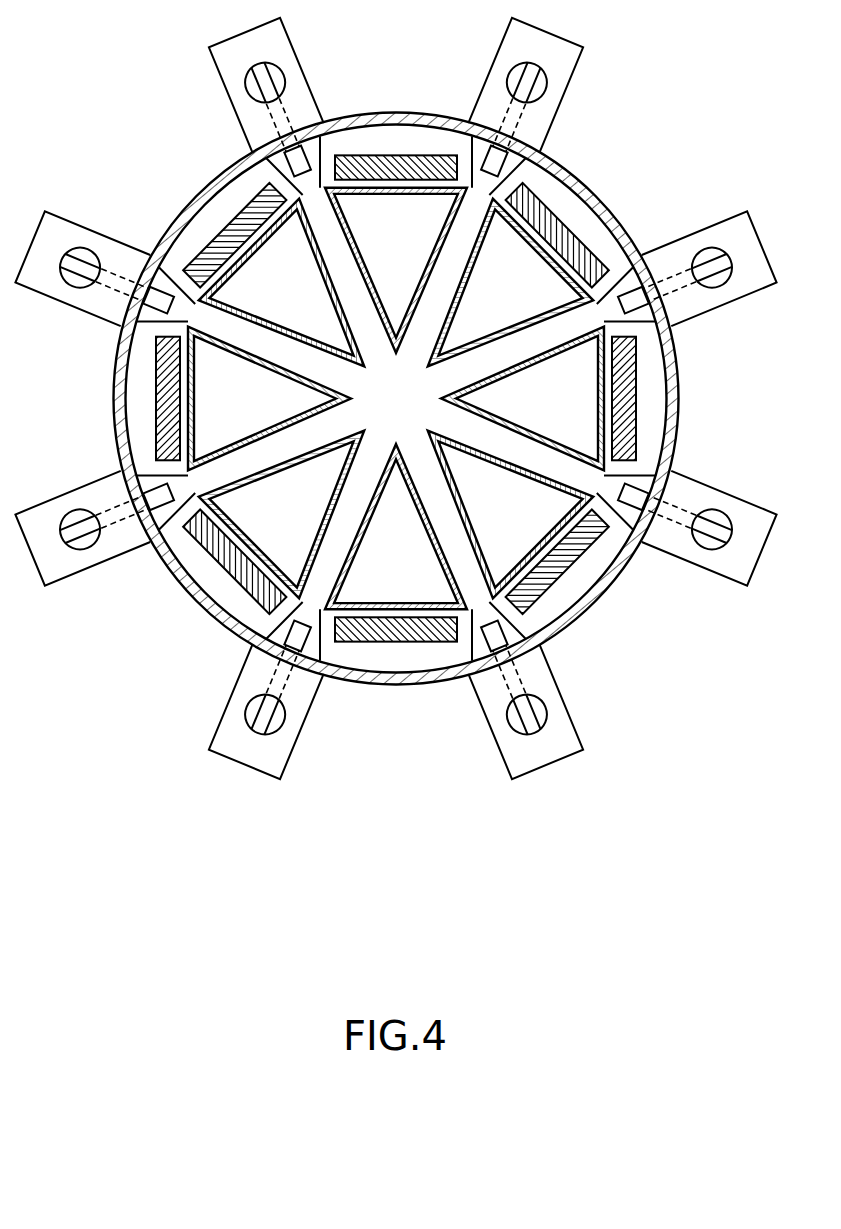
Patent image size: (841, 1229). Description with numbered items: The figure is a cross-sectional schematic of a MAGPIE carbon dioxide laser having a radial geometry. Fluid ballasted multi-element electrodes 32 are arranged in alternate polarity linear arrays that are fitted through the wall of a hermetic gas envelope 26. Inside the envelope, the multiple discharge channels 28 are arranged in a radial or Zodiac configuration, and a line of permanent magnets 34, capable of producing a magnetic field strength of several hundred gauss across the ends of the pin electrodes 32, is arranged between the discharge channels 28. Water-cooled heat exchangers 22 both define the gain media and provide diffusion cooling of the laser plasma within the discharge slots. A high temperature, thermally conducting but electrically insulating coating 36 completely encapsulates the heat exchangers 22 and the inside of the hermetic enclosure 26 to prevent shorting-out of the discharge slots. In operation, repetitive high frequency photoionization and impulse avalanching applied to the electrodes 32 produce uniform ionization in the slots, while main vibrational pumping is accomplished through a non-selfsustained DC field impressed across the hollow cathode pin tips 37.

The water-cooled heat exchanger 22 is at (396, 279).
The hermetic gas envelope 26 is at (374, 710).
The discharge channel 28 is at (482, 229).
The fluid ballasted multi-element electrode 32 is at (601, 73).
The permanent magnet 34 is at (655, 422).
The thermally conducting, electrically insulating coating 36 is at (313, 237).
The hollow cathode pin tip 37 is at (448, 129).